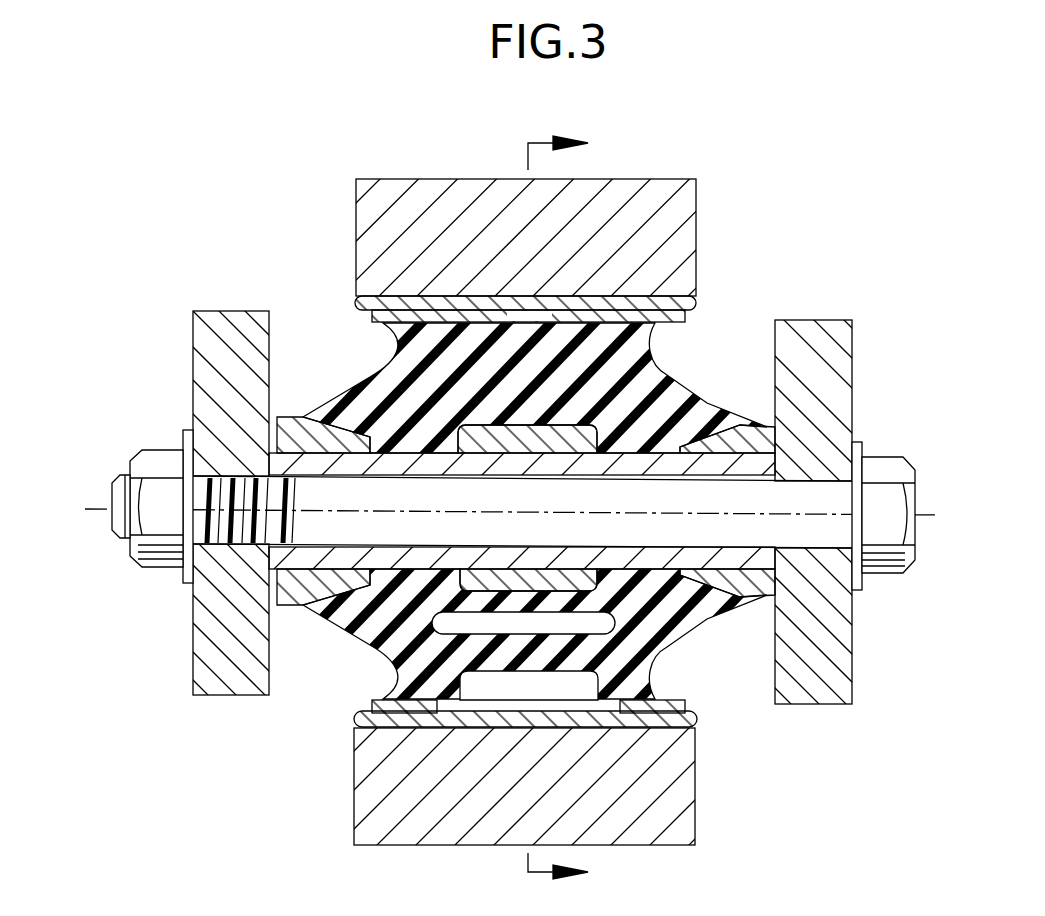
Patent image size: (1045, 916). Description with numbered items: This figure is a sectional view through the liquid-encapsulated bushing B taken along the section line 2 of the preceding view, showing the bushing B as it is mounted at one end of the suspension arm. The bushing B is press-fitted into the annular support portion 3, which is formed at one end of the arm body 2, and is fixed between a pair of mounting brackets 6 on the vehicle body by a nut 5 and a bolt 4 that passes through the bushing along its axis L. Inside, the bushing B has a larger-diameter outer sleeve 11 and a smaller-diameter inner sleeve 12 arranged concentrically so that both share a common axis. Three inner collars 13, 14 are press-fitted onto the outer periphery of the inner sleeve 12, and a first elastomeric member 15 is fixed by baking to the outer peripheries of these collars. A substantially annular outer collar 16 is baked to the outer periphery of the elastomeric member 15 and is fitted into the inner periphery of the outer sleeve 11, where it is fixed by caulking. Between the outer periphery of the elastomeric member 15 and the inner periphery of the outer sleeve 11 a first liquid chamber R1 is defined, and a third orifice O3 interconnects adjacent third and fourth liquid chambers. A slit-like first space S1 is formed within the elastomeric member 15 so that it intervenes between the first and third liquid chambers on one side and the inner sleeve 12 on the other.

The arm body 2 is at (572, 506).
The annular support portion 3 is at (432, 207).
The bolt 4 is at (877, 465).
The nut 5 is at (160, 460).
The mounting brackets 6 is at (218, 325).
The outer sleeve 11 is at (372, 316).
The inner sleeve 12 is at (400, 466).
The inner collar 13 is at (520, 452).
The inner collars 14 is at (310, 440).
The first elastomeric member 15 is at (683, 410).
The outer collar 16 is at (692, 300).
The liquid-encapsulated bushing B is at (512, 504).
The axis L is at (94, 508).
The third orifice O3 is at (527, 317).
The first space S1 is at (538, 633).
The first liquid chamber R1 is at (529, 685).